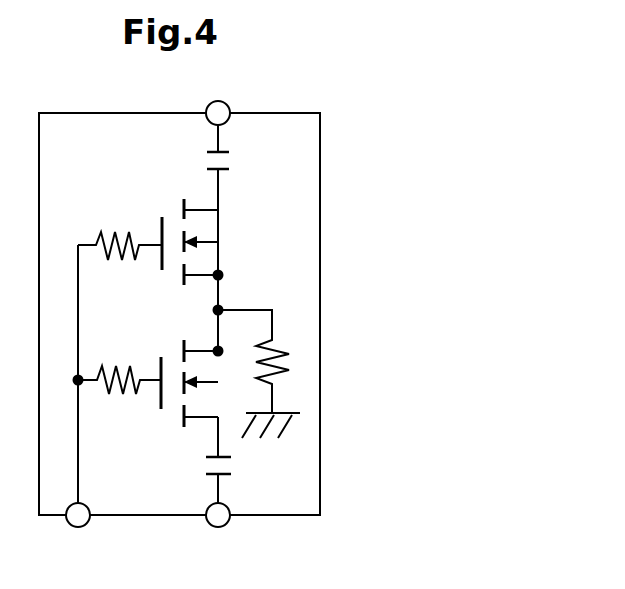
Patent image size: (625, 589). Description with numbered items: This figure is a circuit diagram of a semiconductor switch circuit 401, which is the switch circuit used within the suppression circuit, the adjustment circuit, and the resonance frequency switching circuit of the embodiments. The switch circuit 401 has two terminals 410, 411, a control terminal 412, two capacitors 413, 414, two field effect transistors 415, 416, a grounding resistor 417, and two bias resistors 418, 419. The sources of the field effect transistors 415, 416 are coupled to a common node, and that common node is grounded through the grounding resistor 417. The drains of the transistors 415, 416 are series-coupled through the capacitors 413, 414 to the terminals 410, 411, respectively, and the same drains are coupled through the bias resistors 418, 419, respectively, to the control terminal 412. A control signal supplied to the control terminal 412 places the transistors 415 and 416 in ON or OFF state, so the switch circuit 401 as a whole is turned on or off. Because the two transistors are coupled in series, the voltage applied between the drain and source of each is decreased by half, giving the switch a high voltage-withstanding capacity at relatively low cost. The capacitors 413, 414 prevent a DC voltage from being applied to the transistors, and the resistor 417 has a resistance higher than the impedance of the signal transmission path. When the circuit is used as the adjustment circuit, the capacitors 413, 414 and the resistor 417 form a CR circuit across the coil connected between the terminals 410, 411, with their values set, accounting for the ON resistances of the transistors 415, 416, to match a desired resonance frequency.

The switch circuit 401 is at (78, 112).
The terminal 410 is at (216, 100).
The terminal 411 is at (219, 528).
The control terminal 412 is at (79, 528).
The capacitor 413 is at (232, 159).
The capacitor 414 is at (197, 467).
The field effect transistor 415 is at (170, 198).
The field effect transistor 416 is at (168, 346).
The grounding resistor 417 is at (292, 355).
The bias resistor 418 is at (118, 263).
The bias resistor 419 is at (118, 400).